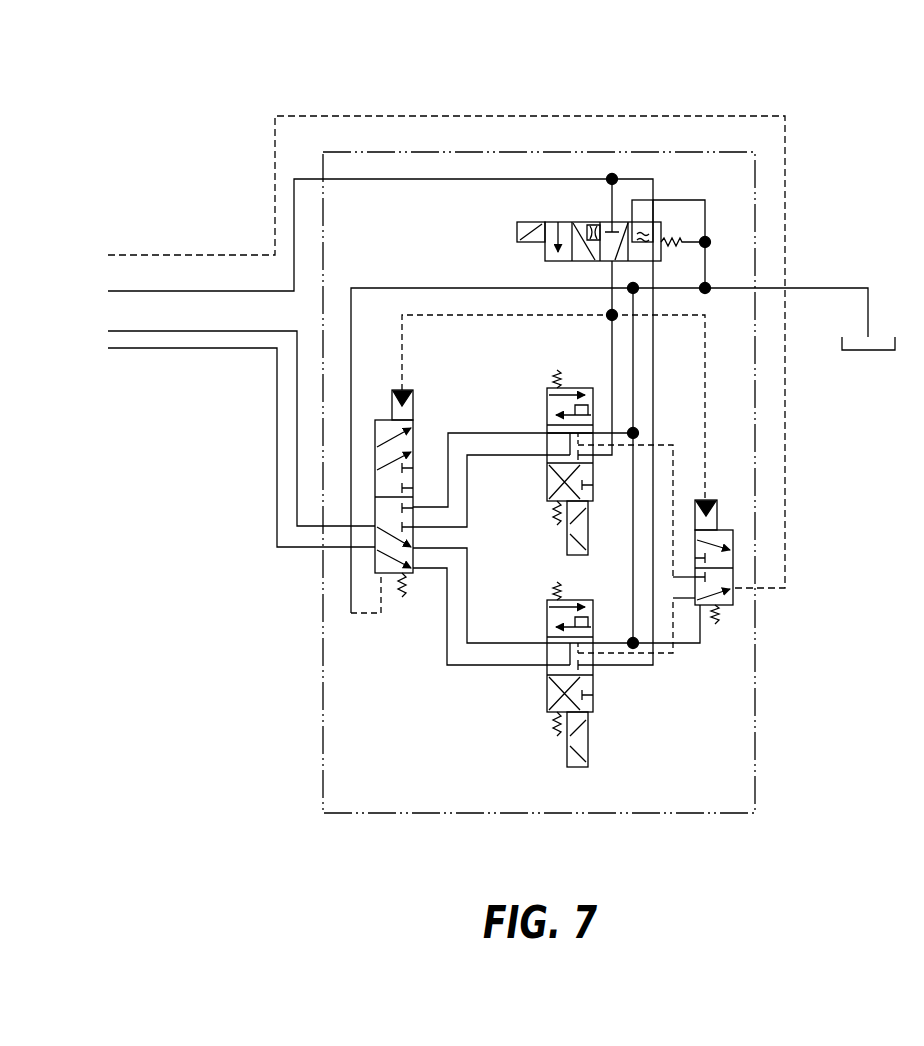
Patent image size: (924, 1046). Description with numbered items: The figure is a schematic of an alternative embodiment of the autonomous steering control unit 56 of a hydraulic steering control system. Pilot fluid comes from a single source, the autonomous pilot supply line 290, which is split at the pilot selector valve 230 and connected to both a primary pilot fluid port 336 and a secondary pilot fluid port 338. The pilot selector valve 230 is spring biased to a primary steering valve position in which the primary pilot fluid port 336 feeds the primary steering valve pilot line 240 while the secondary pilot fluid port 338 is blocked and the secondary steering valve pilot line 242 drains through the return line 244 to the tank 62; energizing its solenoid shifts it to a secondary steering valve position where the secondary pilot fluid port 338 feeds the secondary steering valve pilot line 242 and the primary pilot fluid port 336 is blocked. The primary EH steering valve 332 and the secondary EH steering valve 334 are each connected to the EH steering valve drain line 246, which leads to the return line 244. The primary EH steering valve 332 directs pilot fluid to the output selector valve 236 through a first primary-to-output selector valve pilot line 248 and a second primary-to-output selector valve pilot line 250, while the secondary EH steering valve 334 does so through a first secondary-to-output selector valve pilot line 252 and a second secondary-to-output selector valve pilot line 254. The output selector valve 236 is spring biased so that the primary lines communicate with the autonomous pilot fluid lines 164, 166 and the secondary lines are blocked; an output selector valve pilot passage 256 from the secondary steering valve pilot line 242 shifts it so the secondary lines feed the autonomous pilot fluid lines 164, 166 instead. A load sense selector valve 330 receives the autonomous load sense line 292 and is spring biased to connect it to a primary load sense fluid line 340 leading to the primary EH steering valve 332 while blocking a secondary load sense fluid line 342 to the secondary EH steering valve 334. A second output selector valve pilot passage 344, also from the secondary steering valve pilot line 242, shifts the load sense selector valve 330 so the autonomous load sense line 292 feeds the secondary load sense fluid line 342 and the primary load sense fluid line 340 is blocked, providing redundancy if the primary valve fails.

The autonomous steering control unit 56 is at (818, 93).
The tank 62 is at (868, 352).
The autonomous pilot fluid line 164 is at (190, 350).
The autonomous pilot fluid line 166 is at (190, 330).
The pilot selector valve 230 is at (545, 259).
The output selector valve 236 is at (408, 585).
The primary steering valve pilot line 240 is at (613, 667).
The secondary steering valve pilot line 242 is at (611, 359).
The return line 244 is at (826, 287).
The EH steering valve drain line 246 is at (632, 548).
The first primary-to-output selector valve pilot line 248 is at (492, 667).
The second primary-to-output selector valve pilot line 250 is at (505, 643).
The first secondary-to-output selector valve pilot line 252 is at (510, 456).
The second secondary-to-output selector valve pilot line 254 is at (489, 432).
The output selector valve pilot passage 256 is at (404, 356).
The autonomous pilot supply line 290 is at (190, 290).
The autonomous load sense line 292 is at (190, 254).
The load sense selector valve 330 is at (734, 598).
The primary EH steering valve 332 is at (546, 680).
The secondary EH steering valve 334 is at (546, 415).
The primary pilot fluid port 336 is at (656, 222).
The secondary pilot fluid port 338 is at (610, 222).
The primary load sense fluid line 340 is at (672, 652).
The secondary load sense fluid line 342 is at (673, 441).
The second output selector valve pilot passage 344 is at (707, 376).